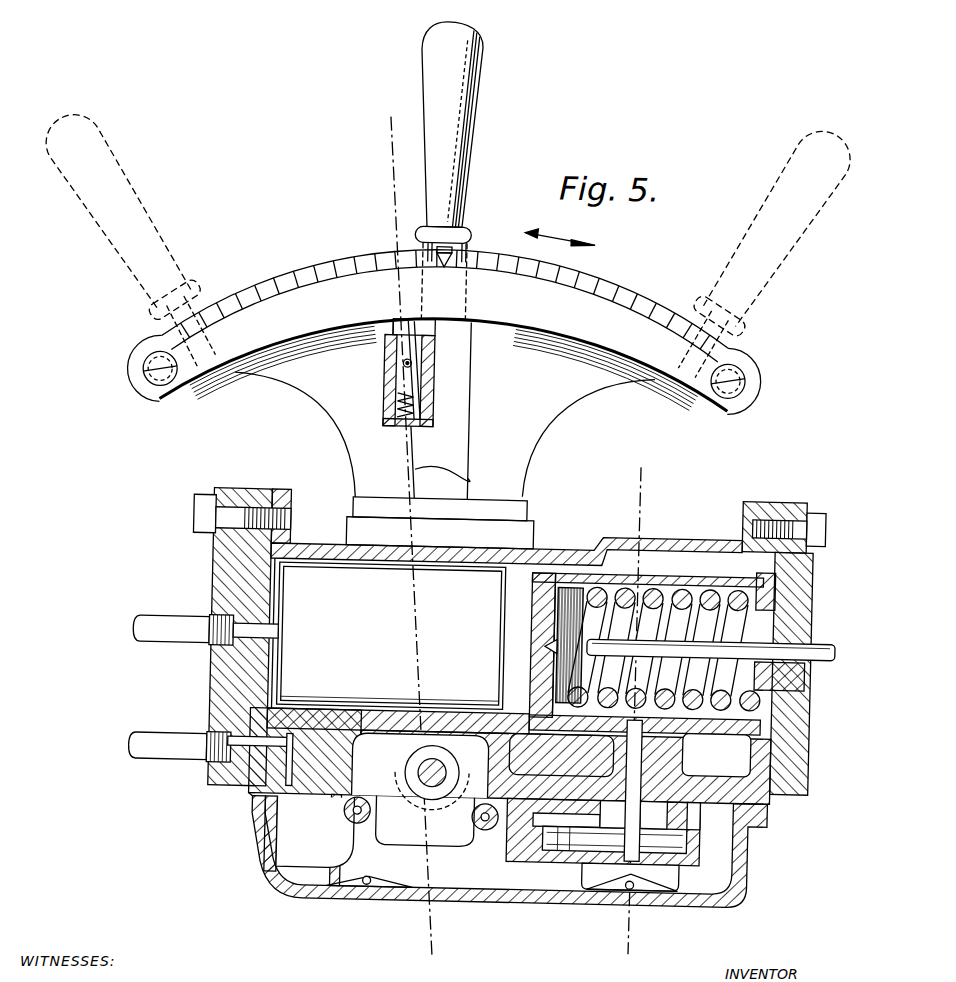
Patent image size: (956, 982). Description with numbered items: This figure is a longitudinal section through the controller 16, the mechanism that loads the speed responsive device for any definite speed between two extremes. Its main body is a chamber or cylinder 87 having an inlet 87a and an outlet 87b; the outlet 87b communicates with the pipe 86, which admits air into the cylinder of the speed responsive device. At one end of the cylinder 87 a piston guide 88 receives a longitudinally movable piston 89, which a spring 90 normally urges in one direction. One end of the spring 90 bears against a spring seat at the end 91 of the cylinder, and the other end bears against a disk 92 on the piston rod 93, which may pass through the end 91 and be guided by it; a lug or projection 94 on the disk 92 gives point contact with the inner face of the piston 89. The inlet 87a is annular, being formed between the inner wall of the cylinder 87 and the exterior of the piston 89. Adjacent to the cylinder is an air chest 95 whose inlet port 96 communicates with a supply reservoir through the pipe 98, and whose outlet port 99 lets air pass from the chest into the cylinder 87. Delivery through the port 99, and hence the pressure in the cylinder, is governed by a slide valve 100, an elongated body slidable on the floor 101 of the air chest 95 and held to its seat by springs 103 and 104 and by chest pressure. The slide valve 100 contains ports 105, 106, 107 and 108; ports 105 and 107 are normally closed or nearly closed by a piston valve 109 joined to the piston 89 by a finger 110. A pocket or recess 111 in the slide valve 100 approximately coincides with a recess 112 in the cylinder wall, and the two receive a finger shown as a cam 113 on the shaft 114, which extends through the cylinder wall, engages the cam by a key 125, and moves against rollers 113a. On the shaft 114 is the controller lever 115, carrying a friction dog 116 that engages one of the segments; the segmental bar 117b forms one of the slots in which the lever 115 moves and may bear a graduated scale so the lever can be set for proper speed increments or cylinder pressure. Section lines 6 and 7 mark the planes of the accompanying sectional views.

The section line 6— 6 is at (410, 535).
The section line 7— 7 is at (633, 710).
The controller 16 is at (289, 252).
The pipe 86 is at (176, 655).
The chamber (cylinder) 87 is at (391, 635).
The inlet 87a is at (548, 567).
The outlet 87b is at (262, 641).
The piston guide 88 is at (706, 566).
The piston 89 is at (538, 606).
The spring 90 is at (653, 586).
The end of the cylinder 91 is at (787, 582).
The disk 92 is at (560, 675).
The piston rod 93 is at (814, 634).
The lug or projection 94 is at (540, 646).
The air chest 95 is at (550, 890).
The inlet port 96 is at (252, 800).
The pipe 98 is at (174, 767).
The outlet or exhaust port 99 is at (676, 776).
The slide valve 100 is at (488, 890).
The floor of the air chest 101 is at (318, 890).
The spring 103 is at (384, 890).
The spring 104 is at (655, 888).
The port 105 is at (702, 812).
The port 106 is at (654, 815).
The port 107 is at (614, 815).
The port 108 is at (538, 852).
The piston valve 109 is at (690, 838).
The finger 110 is at (643, 750).
The pocket or recess 111 is at (352, 850).
The recess 112 is at (380, 710).
The cam (finger) 113 is at (424, 820).
The rollers 113a is at (362, 825).
The shaft 114 is at (420, 768).
The controller lever 115 is at (458, 148).
The friction dog 116 is at (376, 360).
The segmental bar 117b is at (548, 328).
The key 125 is at (433, 787).